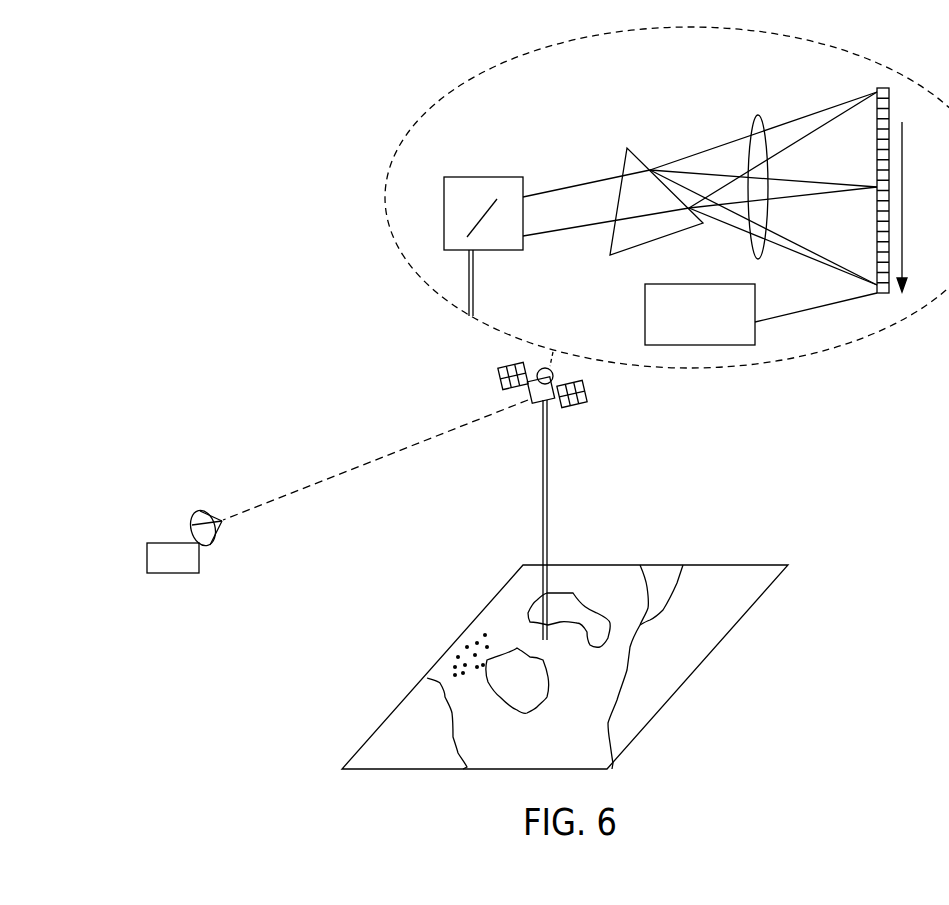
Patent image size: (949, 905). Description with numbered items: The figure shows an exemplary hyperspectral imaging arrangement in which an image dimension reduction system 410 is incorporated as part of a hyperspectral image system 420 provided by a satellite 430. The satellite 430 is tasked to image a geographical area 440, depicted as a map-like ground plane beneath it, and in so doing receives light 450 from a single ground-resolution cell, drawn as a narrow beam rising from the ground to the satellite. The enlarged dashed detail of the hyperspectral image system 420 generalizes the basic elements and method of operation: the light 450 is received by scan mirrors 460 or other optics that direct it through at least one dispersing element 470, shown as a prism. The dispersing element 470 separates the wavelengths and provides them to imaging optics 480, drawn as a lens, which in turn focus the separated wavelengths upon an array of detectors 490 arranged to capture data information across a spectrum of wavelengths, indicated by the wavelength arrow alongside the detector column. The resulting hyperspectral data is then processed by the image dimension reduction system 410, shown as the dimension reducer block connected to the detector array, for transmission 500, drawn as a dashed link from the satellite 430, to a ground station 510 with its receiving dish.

The image dimension reduction system 410 is at (645, 312).
The hyperspectral image system 420 is at (832, 355).
The satellite 430 is at (587, 404).
The geographical area 440 is at (433, 665).
The light 450 is at (474, 287).
The scan mirrors 460 is at (482, 177).
The dispersing element 470 is at (623, 167).
The imaging optics 480 is at (750, 122).
The array of detectors 490 is at (882, 88).
The transmission 500 is at (360, 463).
The ground station 510 is at (163, 543).